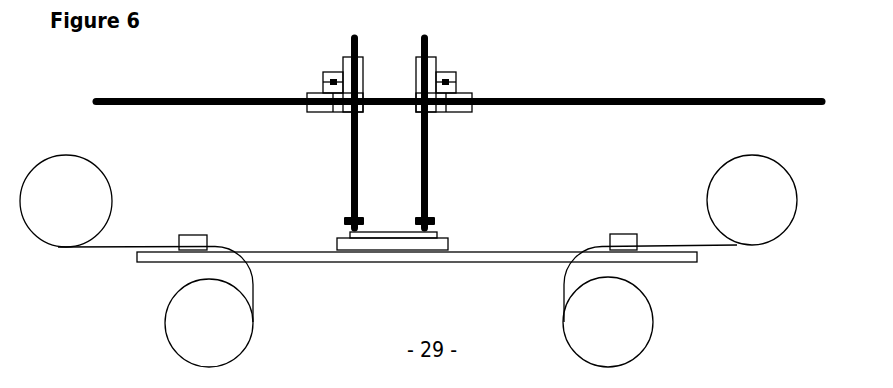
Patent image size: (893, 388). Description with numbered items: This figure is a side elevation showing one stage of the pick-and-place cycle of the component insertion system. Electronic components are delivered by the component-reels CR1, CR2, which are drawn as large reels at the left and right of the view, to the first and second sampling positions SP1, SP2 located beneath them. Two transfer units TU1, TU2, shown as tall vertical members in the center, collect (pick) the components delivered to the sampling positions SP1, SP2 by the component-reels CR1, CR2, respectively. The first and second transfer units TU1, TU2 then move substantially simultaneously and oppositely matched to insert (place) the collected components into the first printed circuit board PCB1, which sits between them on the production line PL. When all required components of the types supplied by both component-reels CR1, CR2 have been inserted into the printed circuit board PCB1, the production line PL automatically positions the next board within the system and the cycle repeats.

The component-reel CR1 is at (66, 201).
The component-reel CR2 is at (752, 200).
The sampling position SP1 is at (192, 245).
The sampling position SP2 is at (625, 247).
The transfer unit TU1 is at (330, 133).
The transfer unit TU2 is at (456, 133).
The first printed circuit board PCB1 is at (437, 233).
The production line PL is at (389, 252).